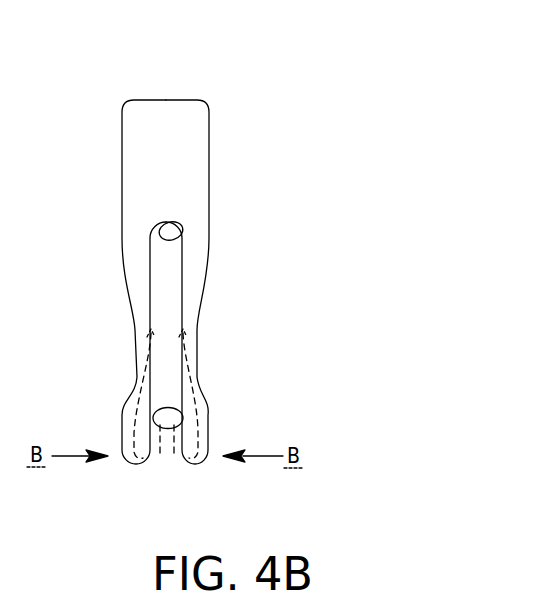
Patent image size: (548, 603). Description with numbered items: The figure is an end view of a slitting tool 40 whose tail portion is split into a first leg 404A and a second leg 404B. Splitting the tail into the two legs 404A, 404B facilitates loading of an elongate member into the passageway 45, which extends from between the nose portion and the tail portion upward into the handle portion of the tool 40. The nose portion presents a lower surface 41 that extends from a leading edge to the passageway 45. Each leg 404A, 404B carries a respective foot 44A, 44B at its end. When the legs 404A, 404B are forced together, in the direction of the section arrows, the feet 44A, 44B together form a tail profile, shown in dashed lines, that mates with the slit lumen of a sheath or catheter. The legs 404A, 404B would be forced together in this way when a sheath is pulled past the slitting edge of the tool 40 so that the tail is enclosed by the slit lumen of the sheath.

The slitting tool 40 is at (191, 52).
The first leg 404A is at (140, 307).
The second leg 404B is at (190, 322).
The passageway 45 is at (165, 280).
The lower surface 41 is at (184, 426).
The foot 44A is at (133, 464).
The foot 44B is at (200, 455).